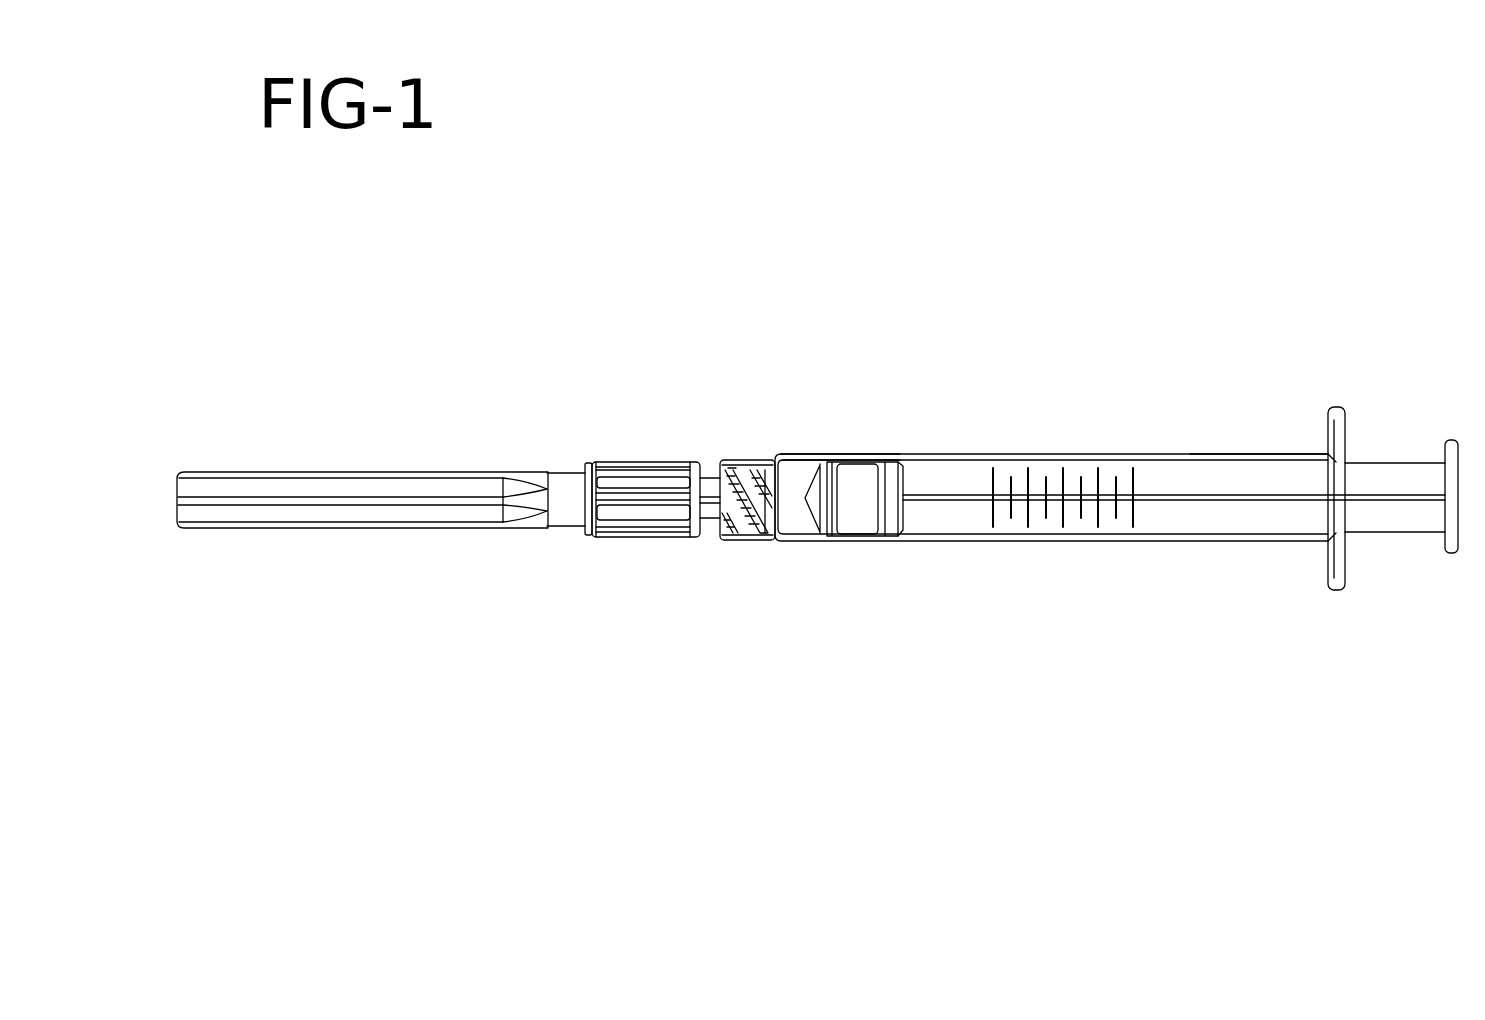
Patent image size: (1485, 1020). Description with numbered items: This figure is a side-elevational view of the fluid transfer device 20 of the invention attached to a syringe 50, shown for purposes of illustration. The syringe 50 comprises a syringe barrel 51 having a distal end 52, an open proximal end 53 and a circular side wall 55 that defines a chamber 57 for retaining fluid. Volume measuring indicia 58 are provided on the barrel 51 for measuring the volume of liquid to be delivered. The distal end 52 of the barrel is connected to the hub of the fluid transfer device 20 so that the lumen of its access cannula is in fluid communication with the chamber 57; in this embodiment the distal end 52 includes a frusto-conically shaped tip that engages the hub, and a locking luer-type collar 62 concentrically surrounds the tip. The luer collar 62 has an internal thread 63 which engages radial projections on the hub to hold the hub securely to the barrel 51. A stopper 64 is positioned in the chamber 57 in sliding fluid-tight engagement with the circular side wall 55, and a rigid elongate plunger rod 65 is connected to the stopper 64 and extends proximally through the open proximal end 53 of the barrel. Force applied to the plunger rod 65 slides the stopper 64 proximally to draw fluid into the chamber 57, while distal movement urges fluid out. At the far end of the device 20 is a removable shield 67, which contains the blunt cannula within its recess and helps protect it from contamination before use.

The fluid transfer device 20 is at (636, 464).
The syringe 50 is at (1116, 487).
The syringe barrel 51 is at (1090, 541).
The distal end 52 is at (807, 462).
The open proximal end 53 is at (1277, 543).
The circular side wall 55 is at (1210, 458).
The chamber 57 is at (792, 513).
The volume measuring indicia 58 is at (993, 478).
The locking luer-type collar 62 is at (747, 490).
The internal thread 63 is at (736, 527).
The stopper 64 is at (858, 483).
The plunger rod 65 is at (1400, 517).
The removable shield 67 is at (395, 472).